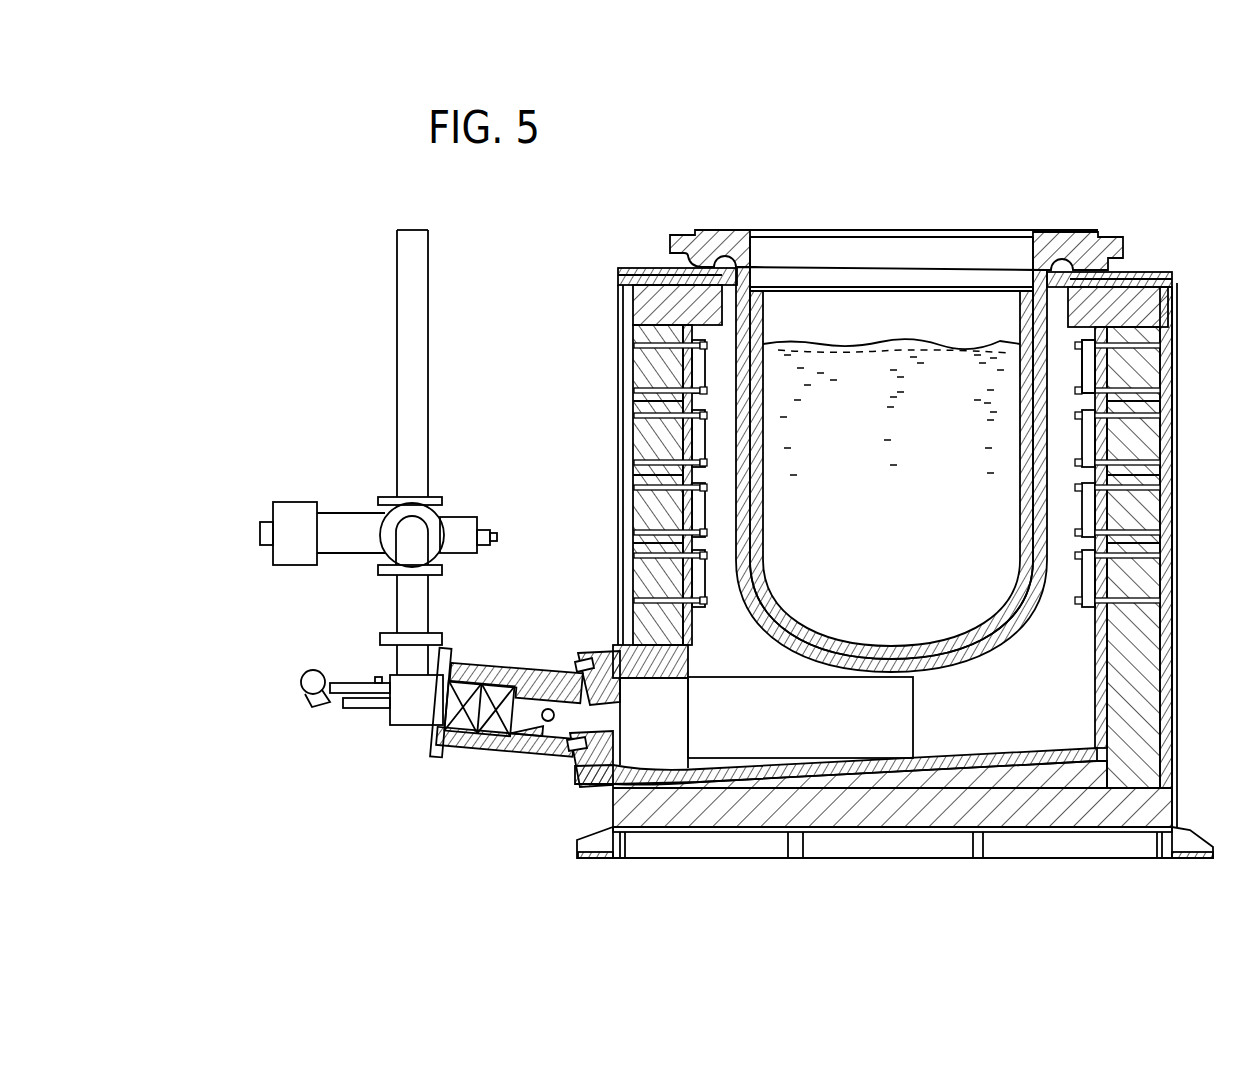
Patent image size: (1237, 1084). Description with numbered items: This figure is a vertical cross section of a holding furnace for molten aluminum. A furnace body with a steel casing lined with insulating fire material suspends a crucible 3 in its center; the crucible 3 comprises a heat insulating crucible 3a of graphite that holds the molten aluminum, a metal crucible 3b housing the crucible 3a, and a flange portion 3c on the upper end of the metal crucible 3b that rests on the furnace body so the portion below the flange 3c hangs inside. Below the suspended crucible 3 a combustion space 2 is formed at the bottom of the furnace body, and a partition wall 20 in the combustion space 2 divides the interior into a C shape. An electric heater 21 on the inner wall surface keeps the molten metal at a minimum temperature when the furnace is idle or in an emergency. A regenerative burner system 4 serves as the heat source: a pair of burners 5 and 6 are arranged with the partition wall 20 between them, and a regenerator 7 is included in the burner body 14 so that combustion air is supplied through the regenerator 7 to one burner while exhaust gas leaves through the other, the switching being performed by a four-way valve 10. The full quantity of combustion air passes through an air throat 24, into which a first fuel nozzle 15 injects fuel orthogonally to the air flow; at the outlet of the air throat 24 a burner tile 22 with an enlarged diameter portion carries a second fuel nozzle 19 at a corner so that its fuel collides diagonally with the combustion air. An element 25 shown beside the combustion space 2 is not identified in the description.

The combustion space 2 is at (906, 592).
The crucible 3 is at (896, 403).
The heat insulating crucible 3a is at (765, 293).
The metal crucible 3b is at (743, 340).
The flange portion 3c is at (695, 247).
The regenerative burner system 4 is at (348, 479).
The burner 5 is at (372, 738).
The burner 6 is at (360, 692).
The regenerator 7 is at (496, 727).
The four-way valve 10 is at (392, 543).
The burner body 14 is at (523, 680).
The first fuel nozzle 15 is at (522, 752).
The second fuel nozzle 19 is at (602, 660).
The partition wall 20 is at (858, 745).
The electric heater 21 is at (1088, 371).
The burner tile 22 is at (659, 784).
The air throat 24 is at (571, 718).
The side refractory block 25 is at (673, 737).